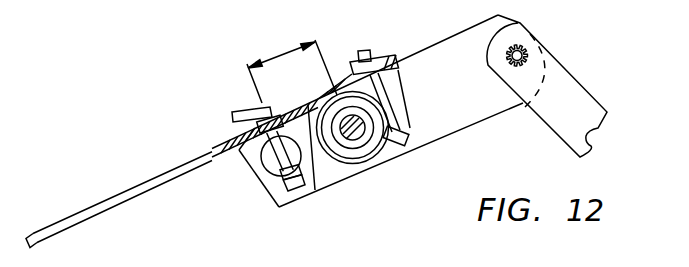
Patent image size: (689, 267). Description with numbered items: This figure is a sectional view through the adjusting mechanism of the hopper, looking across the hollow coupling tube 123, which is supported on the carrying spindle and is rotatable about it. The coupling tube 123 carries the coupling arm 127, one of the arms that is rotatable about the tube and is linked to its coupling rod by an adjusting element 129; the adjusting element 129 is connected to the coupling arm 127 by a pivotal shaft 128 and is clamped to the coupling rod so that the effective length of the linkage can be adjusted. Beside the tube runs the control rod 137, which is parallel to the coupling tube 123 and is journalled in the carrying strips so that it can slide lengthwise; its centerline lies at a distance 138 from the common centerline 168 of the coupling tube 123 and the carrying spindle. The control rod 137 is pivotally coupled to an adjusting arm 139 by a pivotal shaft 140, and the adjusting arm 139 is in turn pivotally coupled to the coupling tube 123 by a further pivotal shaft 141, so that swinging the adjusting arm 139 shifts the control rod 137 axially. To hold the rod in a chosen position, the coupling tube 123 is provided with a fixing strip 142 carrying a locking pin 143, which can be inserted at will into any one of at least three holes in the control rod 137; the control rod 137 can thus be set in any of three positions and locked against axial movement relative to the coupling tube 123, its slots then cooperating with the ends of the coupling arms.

The coupling tube 123 is at (347, 152).
The coupling arm 127 is at (485, 108).
The pivotal shaft 128 is at (521, 57).
The adjusting element 129 is at (573, 100).
The control rod 137 is at (272, 159).
The distance 138 is at (281, 57).
The adjusting arm 139 is at (115, 201).
The pivotal shaft 140 is at (280, 176).
The pivotal shaft 141 is at (394, 103).
The fixing strip 142 is at (315, 190).
The locking pin 143 is at (235, 112).
The common centerline 168 is at (361, 147).